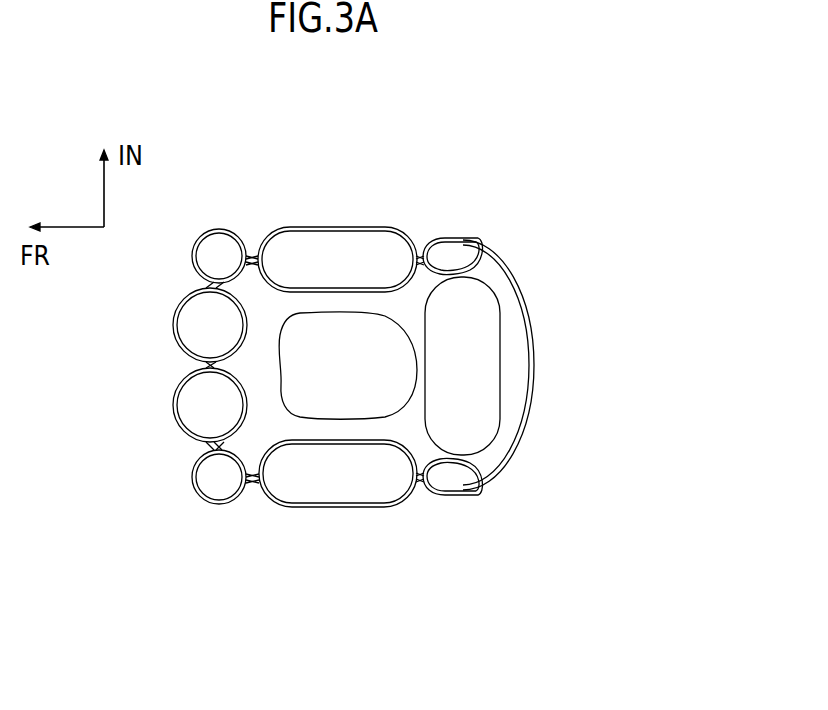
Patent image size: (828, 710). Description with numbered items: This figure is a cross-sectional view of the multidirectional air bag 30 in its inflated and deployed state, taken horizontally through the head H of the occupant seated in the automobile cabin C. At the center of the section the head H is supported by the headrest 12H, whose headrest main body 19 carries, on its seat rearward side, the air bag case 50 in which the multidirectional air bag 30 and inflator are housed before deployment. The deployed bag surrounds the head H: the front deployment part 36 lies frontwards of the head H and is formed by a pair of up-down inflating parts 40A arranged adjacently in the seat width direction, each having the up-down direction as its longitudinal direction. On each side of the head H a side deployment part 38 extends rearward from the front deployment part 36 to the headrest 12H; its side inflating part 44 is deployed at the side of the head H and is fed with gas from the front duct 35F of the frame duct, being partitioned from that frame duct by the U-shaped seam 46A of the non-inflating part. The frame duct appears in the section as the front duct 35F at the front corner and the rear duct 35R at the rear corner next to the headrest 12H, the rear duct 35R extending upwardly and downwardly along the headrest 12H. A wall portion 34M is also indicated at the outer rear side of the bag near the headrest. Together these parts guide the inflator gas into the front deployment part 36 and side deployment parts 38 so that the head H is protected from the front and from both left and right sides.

The multidirectional air bag 30 is at (587, 163).
The front deployment part 36 is at (170, 425).
The front duct 35F is at (218, 236).
The up-down inflating part 40A is at (193, 400).
The side deployment part 38 is at (373, 143).
The side inflating part 44 is at (320, 228).
The U-shaped seam 46A is at (257, 240).
The rear duct 35R is at (442, 240).
The head H is at (385, 380).
The headrest 12H is at (643, 257).
The headrest main body 19 is at (487, 315).
The air bag case 50 is at (535, 333).
The main airbag chamber wall 34M is at (532, 398).
The cabin C is at (588, 470).